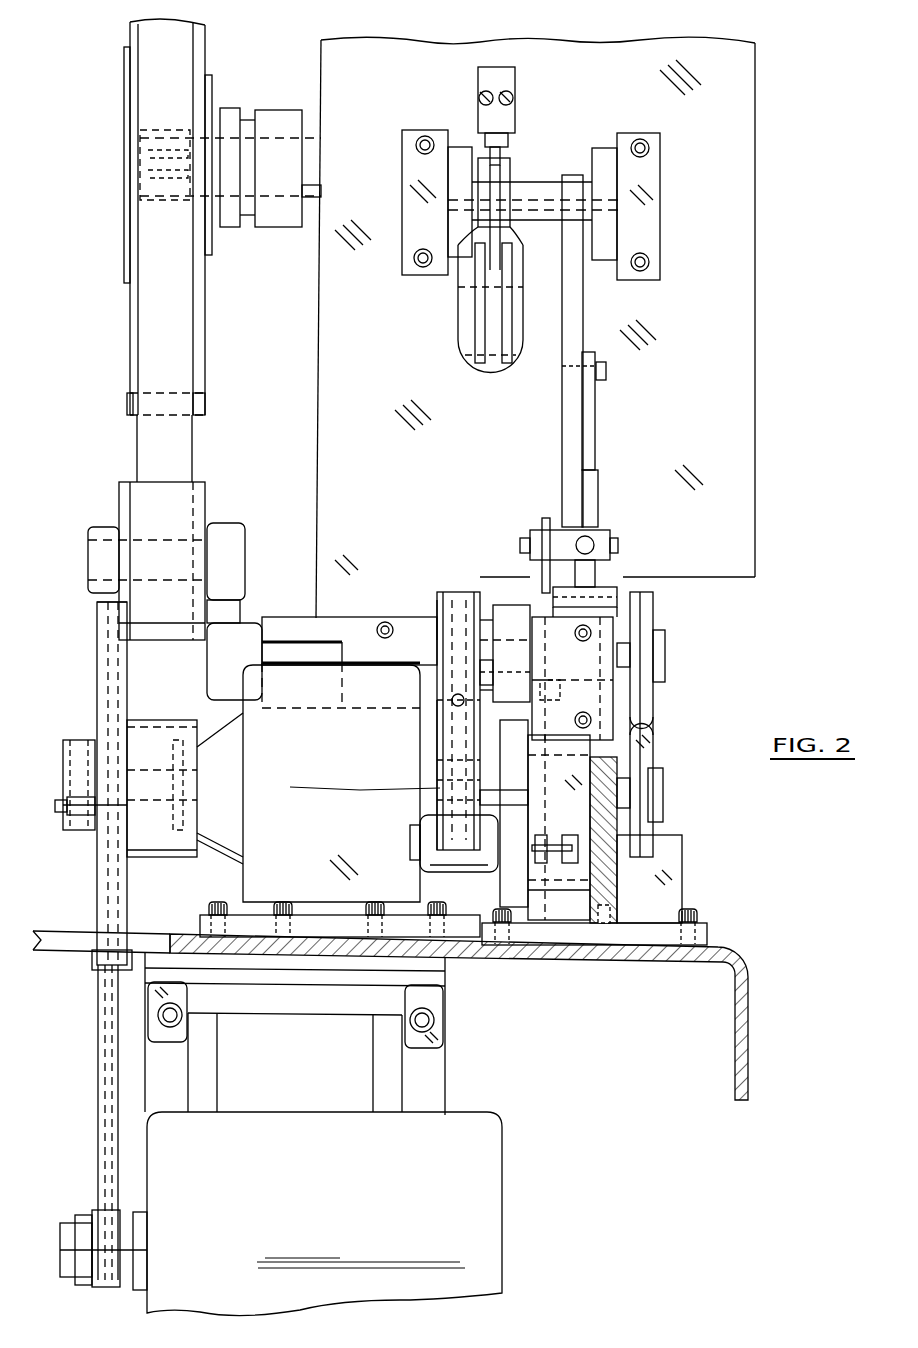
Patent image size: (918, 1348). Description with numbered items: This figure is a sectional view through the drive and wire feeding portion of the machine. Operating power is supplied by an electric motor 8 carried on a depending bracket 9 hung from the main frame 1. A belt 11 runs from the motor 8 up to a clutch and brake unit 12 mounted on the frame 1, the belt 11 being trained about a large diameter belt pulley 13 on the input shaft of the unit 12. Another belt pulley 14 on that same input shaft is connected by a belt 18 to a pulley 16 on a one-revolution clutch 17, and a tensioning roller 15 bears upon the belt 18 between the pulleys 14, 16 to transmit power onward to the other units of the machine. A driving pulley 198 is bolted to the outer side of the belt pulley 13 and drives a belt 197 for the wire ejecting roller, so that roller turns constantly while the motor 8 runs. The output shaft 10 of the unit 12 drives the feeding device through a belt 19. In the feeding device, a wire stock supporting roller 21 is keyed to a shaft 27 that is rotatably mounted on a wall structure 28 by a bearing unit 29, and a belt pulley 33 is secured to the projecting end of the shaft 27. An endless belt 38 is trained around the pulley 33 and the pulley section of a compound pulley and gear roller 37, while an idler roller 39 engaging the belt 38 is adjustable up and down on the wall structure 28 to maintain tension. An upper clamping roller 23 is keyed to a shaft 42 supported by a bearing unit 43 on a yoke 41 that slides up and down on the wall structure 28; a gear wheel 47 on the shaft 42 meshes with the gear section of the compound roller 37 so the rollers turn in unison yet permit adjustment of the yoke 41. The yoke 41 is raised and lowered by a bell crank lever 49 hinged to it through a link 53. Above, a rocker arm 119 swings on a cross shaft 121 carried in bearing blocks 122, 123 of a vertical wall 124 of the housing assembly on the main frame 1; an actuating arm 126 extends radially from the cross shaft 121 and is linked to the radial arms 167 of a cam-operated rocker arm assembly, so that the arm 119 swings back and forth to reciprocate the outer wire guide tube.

The main frame 1 is at (748, 1020).
The electric motor 8 is at (495, 1200).
The depending bracket 9 is at (438, 1082).
The output shaft 10 is at (545, 712).
The belt 11 is at (98, 1068).
The clutch and brake unit 12 is at (243, 880).
The belt pulley 13 is at (97, 617).
The belt pulley 14 is at (183, 748).
The tensioning roller 15 is at (205, 498).
The pulley 16 is at (205, 402).
The one-revolution clutch 17 is at (232, 232).
The belt 18 is at (192, 435).
The belt 19 is at (493, 678).
The wire stock supporting roller 21 is at (682, 853).
The clamping roller 23 is at (653, 612).
The shaft 27 is at (663, 800).
The wall structure 28 is at (612, 905).
The bearing unit 29 is at (612, 860).
The belt pulley 33 is at (437, 770).
The compound pulley and gear roller 37 is at (437, 600).
The endless belt 38 is at (445, 592).
The idler roller 39 is at (465, 872).
The yoke 41 is at (555, 612).
The shaft 42 is at (665, 655).
The bearing unit 43 is at (560, 680).
The gear wheel 47 is at (500, 615).
The bell crank lever 49 is at (596, 530).
The link 53 is at (585, 573).
The rocker arm 119 is at (562, 421).
The cross shaft 121 is at (535, 185).
The bearing block 122 is at (660, 170).
The bearing block 123 is at (410, 134).
The vertical wall 124 is at (755, 350).
The actuating arm 126 is at (512, 233).
The radial arms 167 is at (480, 307).
The belt 197 is at (80, 825).
The driving pulley 198 is at (68, 760).